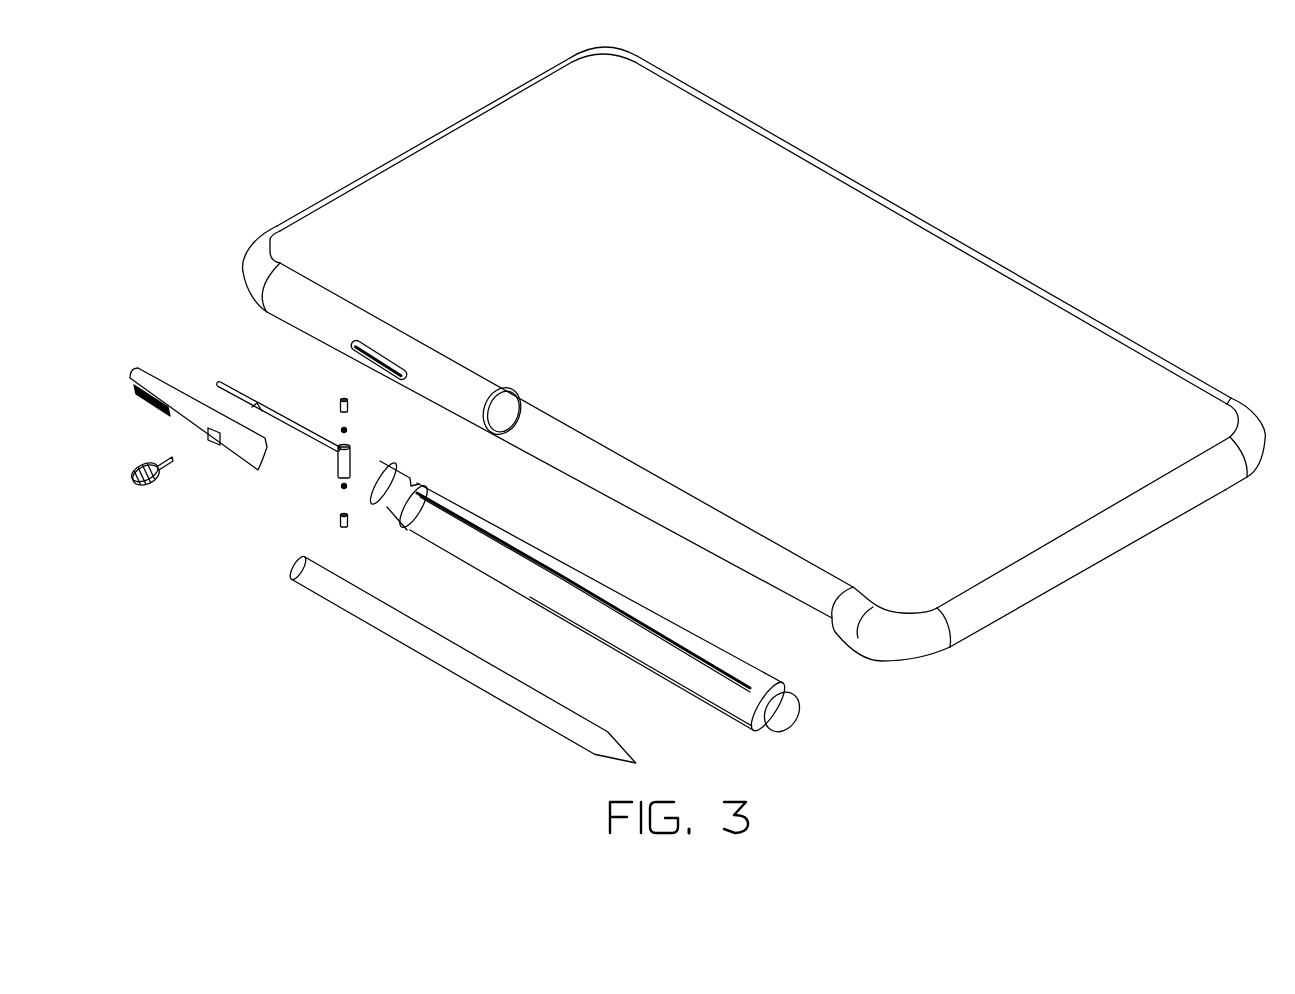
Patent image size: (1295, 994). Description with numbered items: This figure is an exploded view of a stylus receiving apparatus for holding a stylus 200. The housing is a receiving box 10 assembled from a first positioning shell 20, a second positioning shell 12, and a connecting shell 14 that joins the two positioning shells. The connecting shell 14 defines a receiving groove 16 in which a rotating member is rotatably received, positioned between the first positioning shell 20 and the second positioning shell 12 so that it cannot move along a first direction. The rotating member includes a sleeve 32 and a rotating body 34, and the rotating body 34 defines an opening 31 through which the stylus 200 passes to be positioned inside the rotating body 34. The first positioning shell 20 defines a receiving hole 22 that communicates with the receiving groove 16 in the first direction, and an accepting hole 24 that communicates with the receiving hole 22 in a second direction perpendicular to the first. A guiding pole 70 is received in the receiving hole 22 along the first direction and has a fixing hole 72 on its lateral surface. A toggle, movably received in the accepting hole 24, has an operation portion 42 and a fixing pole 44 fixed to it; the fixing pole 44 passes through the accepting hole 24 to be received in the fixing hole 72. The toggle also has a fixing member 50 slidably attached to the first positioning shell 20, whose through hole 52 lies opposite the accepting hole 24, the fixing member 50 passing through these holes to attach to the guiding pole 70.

The receiving box 10 is at (910, 237).
The second positioning shell 12 is at (848, 630).
The connecting shell 14 is at (795, 600).
The receiving groove 16 is at (747, 552).
The first positioning shell 20 is at (293, 293).
The receiving hole 22 is at (498, 410).
The accepting hole 24 is at (378, 370).
The opening 31 is at (673, 660).
The sleeve 32 is at (396, 481).
The rotating body 34 is at (553, 608).
The operation portion 42 is at (135, 483).
The fixing pole 44 is at (174, 466).
The fixing member 50 is at (150, 378).
The through hole 52 is at (208, 432).
The guiding pole 70 is at (229, 383).
The fixing hole 72 is at (258, 410).
The stylus 200 is at (462, 658).